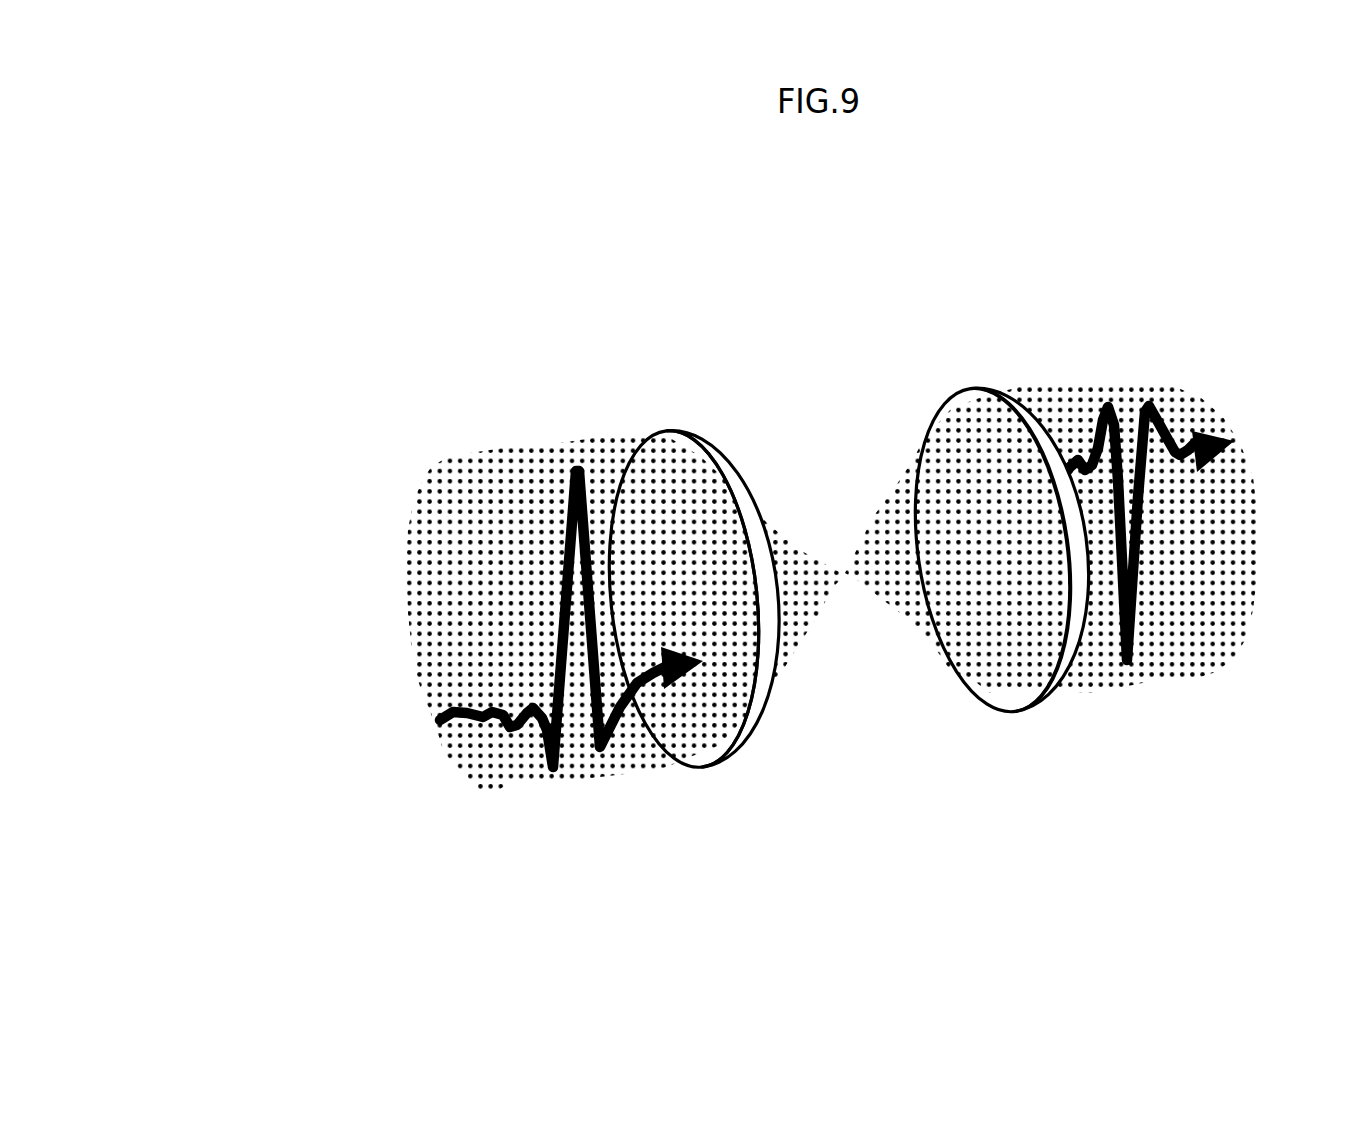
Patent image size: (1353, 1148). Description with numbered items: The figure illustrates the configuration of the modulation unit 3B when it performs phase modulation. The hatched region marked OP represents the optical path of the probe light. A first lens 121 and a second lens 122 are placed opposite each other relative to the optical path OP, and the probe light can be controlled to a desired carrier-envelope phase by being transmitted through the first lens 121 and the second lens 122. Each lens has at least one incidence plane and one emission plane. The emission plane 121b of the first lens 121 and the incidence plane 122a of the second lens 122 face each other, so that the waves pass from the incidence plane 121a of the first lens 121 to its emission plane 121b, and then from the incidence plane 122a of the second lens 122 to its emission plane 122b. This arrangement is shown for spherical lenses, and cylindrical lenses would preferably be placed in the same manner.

The first lens 121 is at (750, 609).
The incidence plane of the first lens 121a is at (695, 720).
The emission plane of the first lens 121b is at (767, 728).
The second lens 122 is at (1056, 553).
The incidence plane of the second lens 122a is at (1012, 652).
The emission plane of the second lens 122b is at (1075, 680).
The optical path OP is at (460, 528).
The modulation unit 3B is at (504, 311).